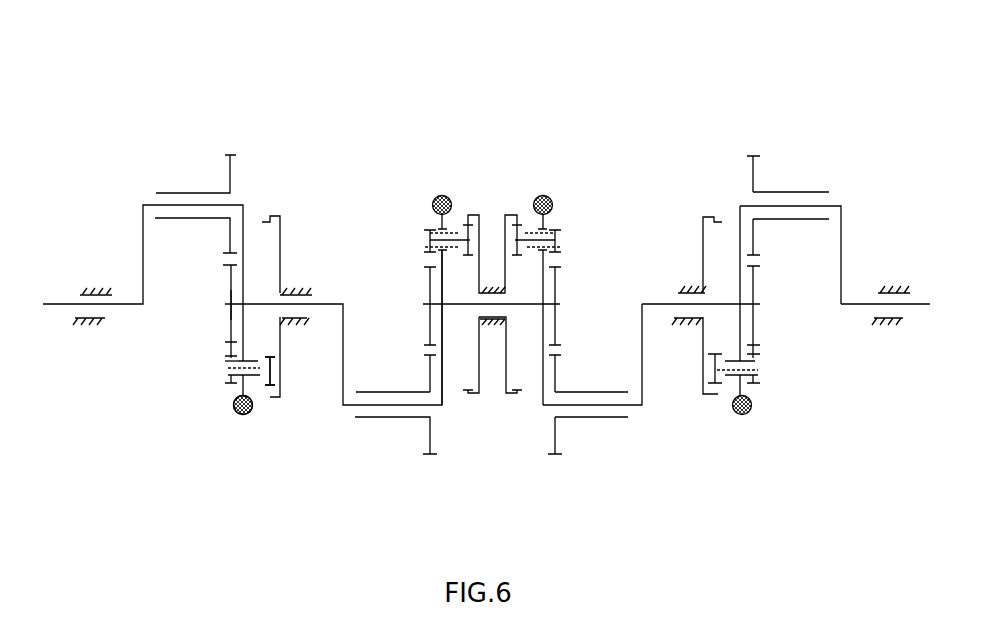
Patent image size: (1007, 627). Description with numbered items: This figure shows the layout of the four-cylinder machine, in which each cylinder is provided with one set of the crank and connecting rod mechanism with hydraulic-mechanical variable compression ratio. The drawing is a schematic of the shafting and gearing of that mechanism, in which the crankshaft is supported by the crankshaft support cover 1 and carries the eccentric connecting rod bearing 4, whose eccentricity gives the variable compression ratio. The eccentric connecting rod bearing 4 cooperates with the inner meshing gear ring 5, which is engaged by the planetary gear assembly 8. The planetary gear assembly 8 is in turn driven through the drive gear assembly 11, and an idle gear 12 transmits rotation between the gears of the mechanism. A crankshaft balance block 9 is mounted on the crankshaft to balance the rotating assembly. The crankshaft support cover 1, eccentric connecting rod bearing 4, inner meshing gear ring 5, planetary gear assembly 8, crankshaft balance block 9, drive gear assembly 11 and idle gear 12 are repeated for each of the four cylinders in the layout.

The crankshaft support cover 1 is at (95, 282).
The eccentric connecting rod bearing 4 is at (193, 193).
The inner meshing gear ring 5 is at (280, 216).
The planetary gear assembly 8 is at (266, 375).
The crankshaft balance block 9 is at (243, 415).
The drive gear assembly 11 is at (229, 360).
The idle gear 12 is at (230, 305).